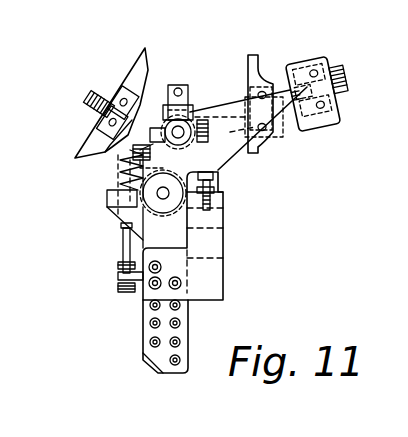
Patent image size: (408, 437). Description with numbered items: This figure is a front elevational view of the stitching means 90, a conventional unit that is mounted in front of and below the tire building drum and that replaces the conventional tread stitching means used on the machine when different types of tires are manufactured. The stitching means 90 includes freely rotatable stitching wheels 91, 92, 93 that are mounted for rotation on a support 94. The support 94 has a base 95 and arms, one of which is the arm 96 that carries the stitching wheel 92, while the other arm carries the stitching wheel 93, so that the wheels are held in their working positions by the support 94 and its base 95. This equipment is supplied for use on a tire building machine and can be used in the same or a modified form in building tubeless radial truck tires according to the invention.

The stitching means 90 is at (241, 190).
The stitching wheel 91 is at (88, 158).
The stitching wheel 92 is at (327, 122).
The stitching wheel 93 is at (257, 67).
The support 94 is at (118, 225).
The base 95 is at (141, 326).
The arm 96 is at (225, 108).